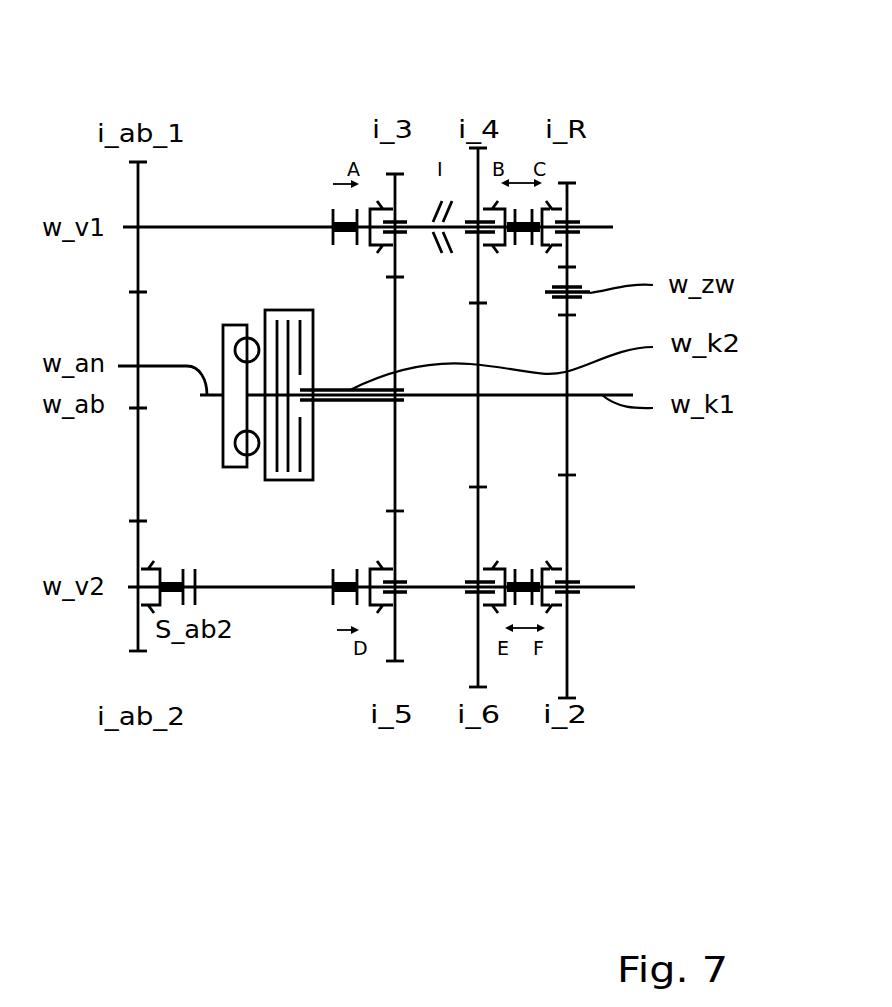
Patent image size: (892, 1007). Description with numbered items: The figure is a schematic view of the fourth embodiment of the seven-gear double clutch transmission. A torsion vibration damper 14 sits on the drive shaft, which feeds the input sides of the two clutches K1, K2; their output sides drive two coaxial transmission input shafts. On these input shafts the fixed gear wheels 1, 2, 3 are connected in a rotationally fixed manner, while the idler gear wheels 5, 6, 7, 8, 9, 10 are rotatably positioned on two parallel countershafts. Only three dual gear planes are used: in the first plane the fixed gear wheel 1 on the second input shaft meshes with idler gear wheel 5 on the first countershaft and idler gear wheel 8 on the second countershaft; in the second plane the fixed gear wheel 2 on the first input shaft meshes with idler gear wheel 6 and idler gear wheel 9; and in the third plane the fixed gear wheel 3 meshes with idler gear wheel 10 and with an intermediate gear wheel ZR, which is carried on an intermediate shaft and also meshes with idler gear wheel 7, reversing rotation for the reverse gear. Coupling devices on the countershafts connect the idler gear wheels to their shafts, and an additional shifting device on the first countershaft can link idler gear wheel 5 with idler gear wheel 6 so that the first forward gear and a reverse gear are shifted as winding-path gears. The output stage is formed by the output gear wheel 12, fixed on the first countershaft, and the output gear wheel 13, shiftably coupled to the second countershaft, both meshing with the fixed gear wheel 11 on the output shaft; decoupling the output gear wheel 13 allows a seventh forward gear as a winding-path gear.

The fixed gear wheel 1 is at (393, 457).
The fixed gear wheel 2 is at (478, 452).
The fixed gear wheel 3 is at (568, 455).
The idler gear wheel 5 is at (393, 185).
The idler gear wheel 6 is at (478, 168).
The idler gear wheel 7 is at (568, 197).
The idler gear wheel 8 is at (393, 537).
The idler gear wheel 9 is at (478, 647).
The idler gear wheel 10 is at (568, 618).
The fixed gear wheel 11 is at (140, 322).
The output gear wheel 12 is at (137, 185).
The output gear wheel 13 is at (138, 625).
The torsion vibration damper 14 is at (235, 467).
The clutch K1 is at (277, 310).
The clutch K2 is at (300, 310).
The intermediate gear wheel ZR is at (568, 276).